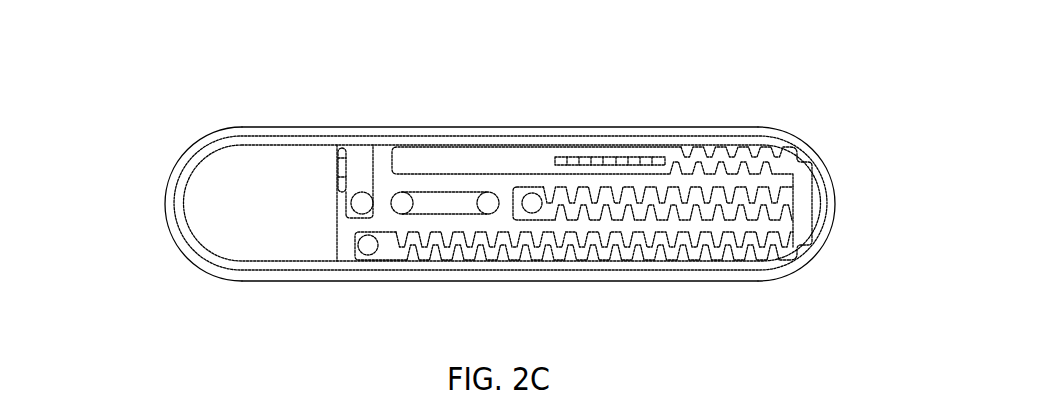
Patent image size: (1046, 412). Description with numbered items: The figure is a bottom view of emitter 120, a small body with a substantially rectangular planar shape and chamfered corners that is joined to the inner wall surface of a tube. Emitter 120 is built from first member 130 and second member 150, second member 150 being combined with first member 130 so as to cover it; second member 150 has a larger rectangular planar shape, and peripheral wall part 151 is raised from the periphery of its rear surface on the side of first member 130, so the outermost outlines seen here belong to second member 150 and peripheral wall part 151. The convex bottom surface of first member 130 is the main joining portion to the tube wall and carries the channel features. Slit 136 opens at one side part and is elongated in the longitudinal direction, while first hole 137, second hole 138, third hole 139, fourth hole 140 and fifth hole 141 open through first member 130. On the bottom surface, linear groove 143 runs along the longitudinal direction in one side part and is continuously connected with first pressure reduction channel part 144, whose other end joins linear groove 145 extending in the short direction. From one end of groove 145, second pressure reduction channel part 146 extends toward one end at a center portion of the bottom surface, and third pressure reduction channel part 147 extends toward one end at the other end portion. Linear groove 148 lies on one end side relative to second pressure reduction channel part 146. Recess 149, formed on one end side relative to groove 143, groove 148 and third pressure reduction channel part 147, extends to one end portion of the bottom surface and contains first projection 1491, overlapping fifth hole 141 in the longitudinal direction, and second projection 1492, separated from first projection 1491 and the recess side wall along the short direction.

The emitter 120 is at (862, 95).
The first member 130 is at (296, 134).
The slit 136 is at (612, 157).
The first hole 137 is at (533, 193).
The second hole 138 is at (488, 215).
The third hole 139 is at (403, 215).
The fourth hole 140 is at (368, 256).
The fifth hole 141 is at (365, 192).
The linear groove 143 is at (499, 147).
The first pressure reduction channel part 144 is at (713, 147).
The linear groove 145 is at (813, 201).
The second pressure reduction channel part 146 is at (743, 221).
The third pressure reduction channel part 147 is at (700, 261).
The linear groove 148 is at (445, 216).
The recess 149 is at (235, 262).
The second member 150 is at (241, 128).
The peripheral wall part 151 is at (165, 205).
The first projection 1491 is at (337, 200).
The second projection 1492 is at (341, 145).